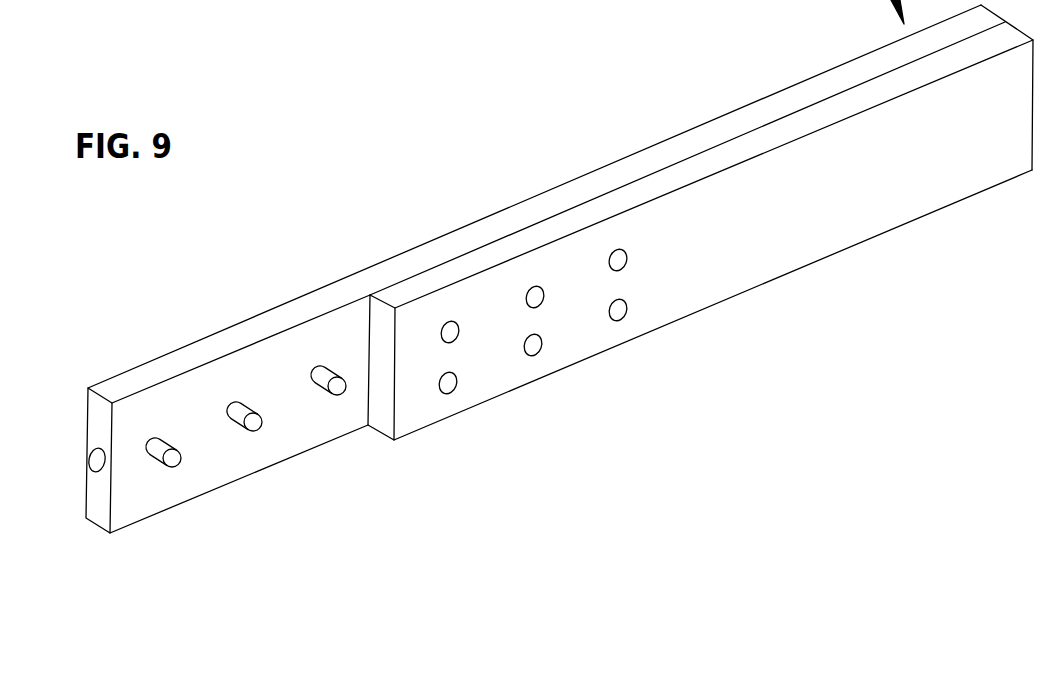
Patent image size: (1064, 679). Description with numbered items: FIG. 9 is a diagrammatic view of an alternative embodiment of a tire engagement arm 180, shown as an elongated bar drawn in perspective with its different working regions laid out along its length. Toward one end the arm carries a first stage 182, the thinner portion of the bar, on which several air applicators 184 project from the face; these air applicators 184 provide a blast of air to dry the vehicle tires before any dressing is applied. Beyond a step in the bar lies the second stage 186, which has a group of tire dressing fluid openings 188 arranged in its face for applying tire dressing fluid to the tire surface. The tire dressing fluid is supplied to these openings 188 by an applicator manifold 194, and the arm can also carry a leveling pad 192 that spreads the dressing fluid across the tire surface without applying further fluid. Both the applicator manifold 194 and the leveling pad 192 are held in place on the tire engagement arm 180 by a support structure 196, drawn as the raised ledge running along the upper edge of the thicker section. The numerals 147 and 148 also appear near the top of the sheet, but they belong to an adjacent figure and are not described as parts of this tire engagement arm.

The component of adjacent figure 147 is at (322, 0).
The component of adjacent figure 148 is at (236, 0).
The tire engagement arm 180 is at (555, 283).
The first stage 182 is at (167, 322).
The air applicators 184 is at (168, 466).
The second stage 186 is at (609, 144).
The tire dressing fluid openings 188 is at (532, 346).
The leveling pad 192 is at (875, 217).
The applicator manifold 194 is at (380, 275).
The support structure 196 is at (765, 117).